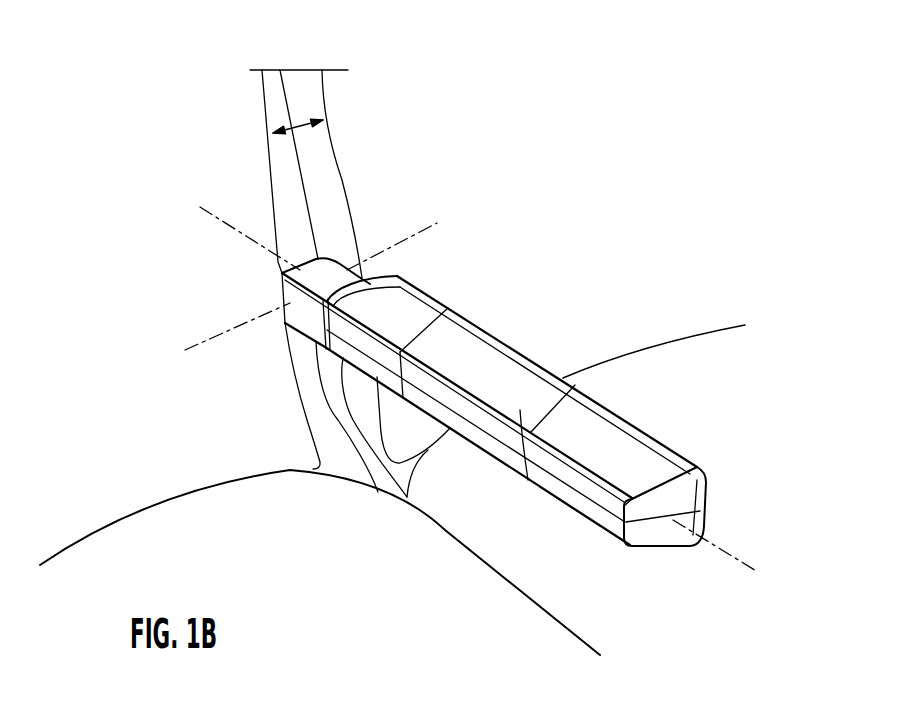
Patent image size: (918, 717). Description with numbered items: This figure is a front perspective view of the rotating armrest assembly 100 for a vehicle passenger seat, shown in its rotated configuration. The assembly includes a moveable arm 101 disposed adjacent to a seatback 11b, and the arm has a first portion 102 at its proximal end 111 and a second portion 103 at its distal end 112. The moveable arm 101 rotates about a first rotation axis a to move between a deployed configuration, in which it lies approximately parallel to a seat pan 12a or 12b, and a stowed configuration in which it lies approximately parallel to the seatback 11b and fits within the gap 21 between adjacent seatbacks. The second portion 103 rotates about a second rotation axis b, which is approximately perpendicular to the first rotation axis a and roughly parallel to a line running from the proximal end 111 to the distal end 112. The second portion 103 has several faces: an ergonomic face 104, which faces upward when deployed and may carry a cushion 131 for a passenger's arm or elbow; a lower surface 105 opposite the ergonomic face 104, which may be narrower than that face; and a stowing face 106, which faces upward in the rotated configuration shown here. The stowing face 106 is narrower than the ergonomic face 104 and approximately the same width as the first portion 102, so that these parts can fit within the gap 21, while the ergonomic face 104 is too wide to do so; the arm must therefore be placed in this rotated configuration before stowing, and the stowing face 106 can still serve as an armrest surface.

The rotating armrest assembly 100 is at (641, 178).
The moveable arm 101 is at (497, 377).
The first portion 102 is at (310, 308).
The second portion 103 is at (531, 432).
The ergonomic face 104 is at (708, 490).
The lower surface 105 is at (552, 494).
The stowing face 106 is at (633, 503).
The proximal end 111 is at (290, 291).
The distal end 112 is at (650, 528).
The cushion 131 is at (618, 412).
The seatback 11b is at (487, 156).
The seat pan 12a is at (323, 576).
The seat pan 12b is at (775, 384).
The gap 21 is at (297, 122).
The first rotation axis a is at (202, 342).
The second rotation axis b is at (238, 229).